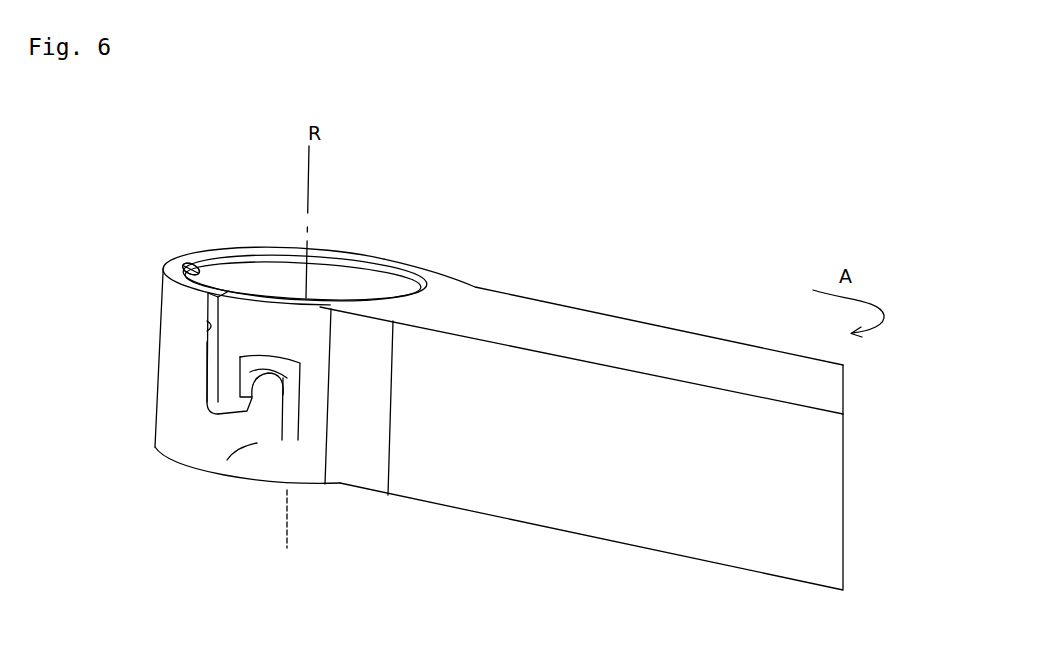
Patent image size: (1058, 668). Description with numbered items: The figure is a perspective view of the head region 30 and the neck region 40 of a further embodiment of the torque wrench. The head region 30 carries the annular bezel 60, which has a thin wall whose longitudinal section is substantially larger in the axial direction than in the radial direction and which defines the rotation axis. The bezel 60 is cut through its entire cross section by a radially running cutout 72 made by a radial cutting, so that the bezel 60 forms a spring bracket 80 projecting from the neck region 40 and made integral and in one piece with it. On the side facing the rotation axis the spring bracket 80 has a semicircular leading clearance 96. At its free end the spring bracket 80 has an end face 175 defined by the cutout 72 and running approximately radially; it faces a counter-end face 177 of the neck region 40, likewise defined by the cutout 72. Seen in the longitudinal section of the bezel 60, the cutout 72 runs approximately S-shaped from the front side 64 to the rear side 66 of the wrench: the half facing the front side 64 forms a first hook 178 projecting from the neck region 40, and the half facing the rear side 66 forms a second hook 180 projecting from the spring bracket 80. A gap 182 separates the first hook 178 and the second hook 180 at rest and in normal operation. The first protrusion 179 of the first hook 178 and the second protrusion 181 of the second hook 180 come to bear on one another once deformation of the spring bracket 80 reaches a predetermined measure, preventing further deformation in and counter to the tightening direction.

The head region 30 is at (382, 228).
The neck region 40 is at (679, 277).
The bezel 60 is at (193, 261).
The spring bracket 80 is at (191, 269).
The semicircular clearance 96 is at (187, 268).
The cutout 72 is at (229, 291).
The front side 64 is at (322, 306).
The rear side 66 is at (228, 487).
The end face 175 is at (205, 327).
The counter-end face 177 is at (227, 460).
The first hook 178 is at (253, 330).
The first protrusion 179 is at (225, 377).
The second hook 180 is at (240, 395).
The second protrusion 181 is at (268, 393).
The gap 182 is at (207, 342).